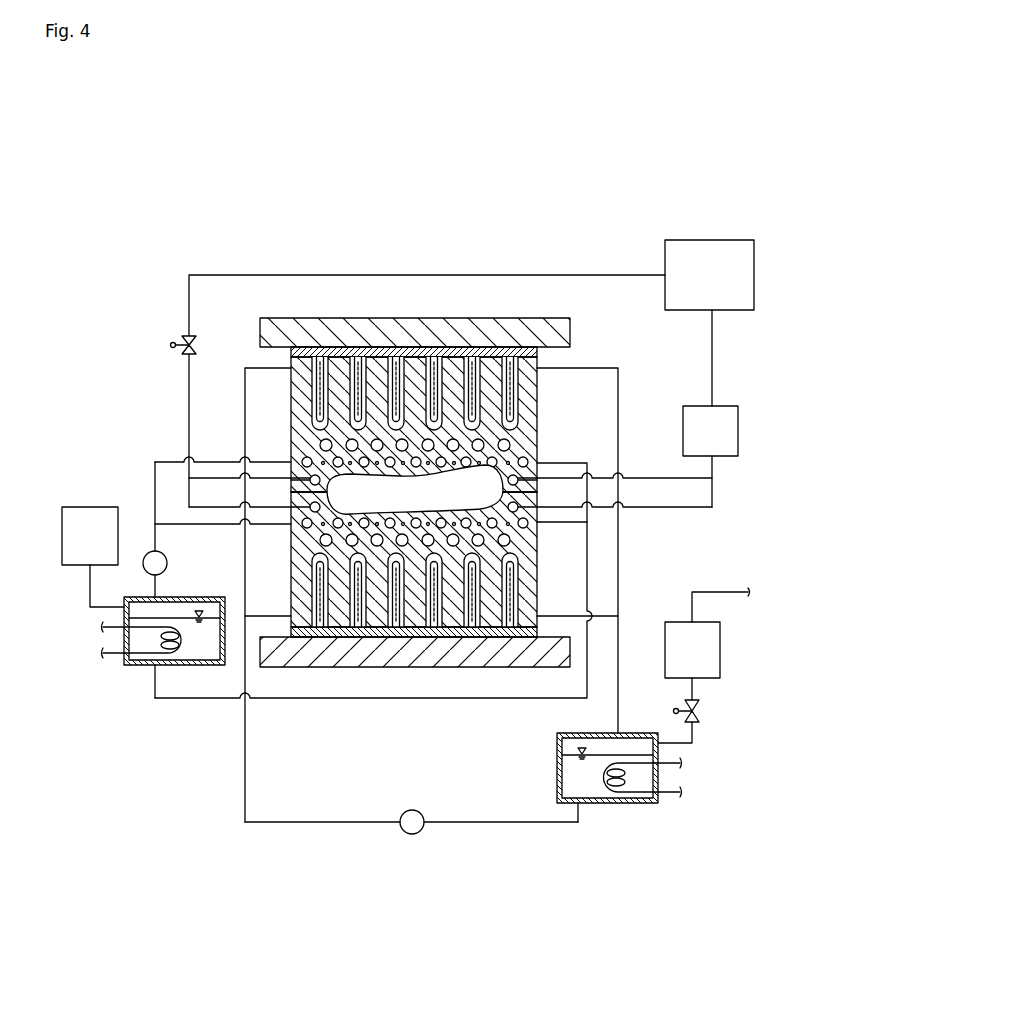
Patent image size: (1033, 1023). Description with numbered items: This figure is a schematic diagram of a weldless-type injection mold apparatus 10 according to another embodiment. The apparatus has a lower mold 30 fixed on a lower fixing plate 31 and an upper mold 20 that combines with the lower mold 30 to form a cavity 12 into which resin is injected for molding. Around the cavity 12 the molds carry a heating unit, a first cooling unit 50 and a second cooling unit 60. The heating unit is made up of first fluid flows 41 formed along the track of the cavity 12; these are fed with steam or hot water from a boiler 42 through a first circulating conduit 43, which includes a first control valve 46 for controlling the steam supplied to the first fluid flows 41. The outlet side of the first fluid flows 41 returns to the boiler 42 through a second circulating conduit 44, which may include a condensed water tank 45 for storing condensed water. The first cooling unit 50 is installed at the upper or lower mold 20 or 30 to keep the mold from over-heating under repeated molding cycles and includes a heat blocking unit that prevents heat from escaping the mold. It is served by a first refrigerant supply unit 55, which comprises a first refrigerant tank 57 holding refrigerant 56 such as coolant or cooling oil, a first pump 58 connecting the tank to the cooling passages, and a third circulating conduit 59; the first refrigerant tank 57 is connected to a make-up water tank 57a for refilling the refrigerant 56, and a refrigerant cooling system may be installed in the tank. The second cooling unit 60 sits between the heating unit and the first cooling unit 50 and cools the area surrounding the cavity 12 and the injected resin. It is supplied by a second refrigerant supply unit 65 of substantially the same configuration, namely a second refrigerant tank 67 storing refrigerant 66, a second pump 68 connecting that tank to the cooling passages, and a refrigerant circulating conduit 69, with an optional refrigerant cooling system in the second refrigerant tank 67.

The weldless-type injection mold apparatus 10 is at (234, 137).
The cavity 12 is at (367, 487).
The upper mold 20 is at (537, 393).
The lower mold 30 is at (537, 572).
The lower fixing plate 31 is at (433, 668).
The first fluid flows 41 is at (537, 448).
The boiler 42 is at (710, 240).
The first circulating conduit 43 is at (520, 275).
The second circulating conduit 44 is at (713, 355).
The condensed water tank 45 is at (738, 430).
The first control valve 46 is at (182, 340).
The first cooling unit 50 is at (313, 637).
The first refrigerant supply unit 55 is at (548, 850).
The refrigerant 56 is at (582, 780).
The first refrigerant tank 57 is at (636, 805).
The make-up water tank 57a is at (720, 652).
The first pump 58 is at (413, 835).
The third circulating conduit 59 is at (486, 825).
The second cooling unit 60 is at (520, 541).
The second refrigerant supply unit 65 is at (155, 715).
The refrigerant 66 is at (138, 667).
The second refrigerant tank 67 is at (178, 700).
The second pump 68 is at (168, 560).
The refrigerant circulating conduit 69 is at (202, 647).